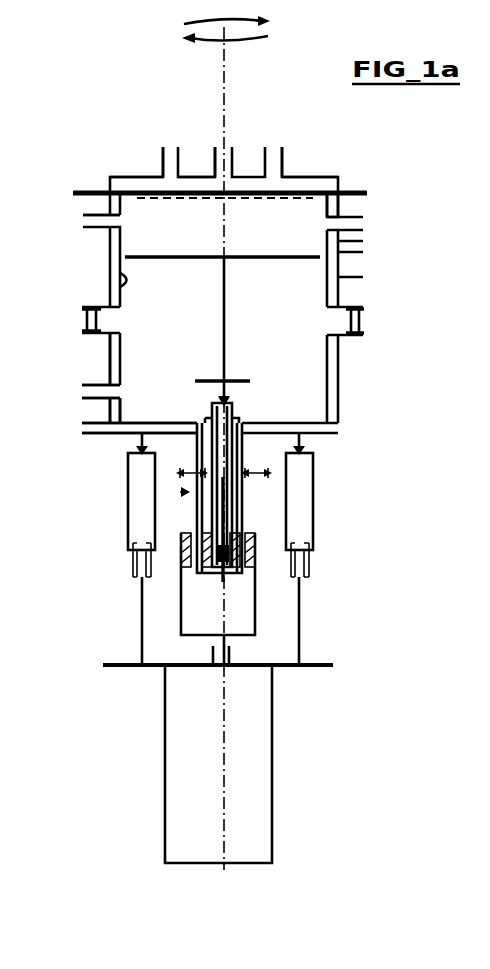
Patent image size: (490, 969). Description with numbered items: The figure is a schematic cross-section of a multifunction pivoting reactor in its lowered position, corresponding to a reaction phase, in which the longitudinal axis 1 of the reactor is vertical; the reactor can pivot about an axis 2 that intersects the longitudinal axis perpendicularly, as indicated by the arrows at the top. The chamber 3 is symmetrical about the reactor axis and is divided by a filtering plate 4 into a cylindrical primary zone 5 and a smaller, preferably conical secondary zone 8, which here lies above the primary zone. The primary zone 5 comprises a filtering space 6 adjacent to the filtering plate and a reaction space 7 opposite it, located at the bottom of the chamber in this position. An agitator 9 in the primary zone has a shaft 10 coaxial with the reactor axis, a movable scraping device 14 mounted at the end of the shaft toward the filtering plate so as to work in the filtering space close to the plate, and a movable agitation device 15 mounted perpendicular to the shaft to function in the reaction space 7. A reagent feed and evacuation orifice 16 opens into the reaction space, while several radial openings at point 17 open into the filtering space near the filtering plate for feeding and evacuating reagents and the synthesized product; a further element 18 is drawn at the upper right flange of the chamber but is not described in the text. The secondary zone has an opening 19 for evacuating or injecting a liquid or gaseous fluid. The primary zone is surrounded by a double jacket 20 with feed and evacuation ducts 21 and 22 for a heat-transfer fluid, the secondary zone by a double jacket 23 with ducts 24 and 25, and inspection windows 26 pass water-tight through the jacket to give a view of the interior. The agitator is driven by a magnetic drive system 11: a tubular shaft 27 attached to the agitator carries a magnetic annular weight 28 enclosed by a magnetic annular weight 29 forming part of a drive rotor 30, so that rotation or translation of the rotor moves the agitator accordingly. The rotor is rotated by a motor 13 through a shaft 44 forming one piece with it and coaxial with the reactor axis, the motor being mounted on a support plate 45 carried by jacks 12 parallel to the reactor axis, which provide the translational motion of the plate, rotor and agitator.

The longitudinal axis 1 is at (226, 46).
The pivoting axis 2 is at (317, 460).
The chamber 3 is at (110, 278).
The filtering plate 4 is at (320, 178).
The primary zone 5 is at (158, 350).
The filtering space 6 is at (156, 211).
The reaction space 7 is at (155, 388).
The secondary zone 8 is at (197, 187).
The agitator 9 is at (240, 343).
The shaft 10 is at (222, 312).
The magnetic drive system 11 is at (180, 492).
The jacks 12 is at (137, 530).
The motor 13 is at (253, 758).
The movable scraping device 14 is at (293, 258).
The movable agitation device 15 is at (250, 381).
The reagent feed and evacuation orifice 16 is at (93, 388).
The radial openings 17 is at (97, 220).
The right flange 18 is at (357, 220).
The opening 19 is at (222, 157).
The double jacket 20 is at (332, 358).
The feed duct 21 is at (90, 425).
The evacuation duct 22 is at (360, 247).
The double jacket 23 is at (287, 187).
The feed duct 24 is at (170, 157).
The evacuation duct 25 is at (276, 153).
The inspection windows 26 is at (363, 322).
The tubular shaft 27 is at (232, 505).
The magnetic annular weight 28 is at (253, 573).
The magnetic annular weight 29 is at (250, 552).
The drive rotor 30 is at (257, 620).
The shaft 44 is at (208, 638).
The support plate 45 is at (307, 665).